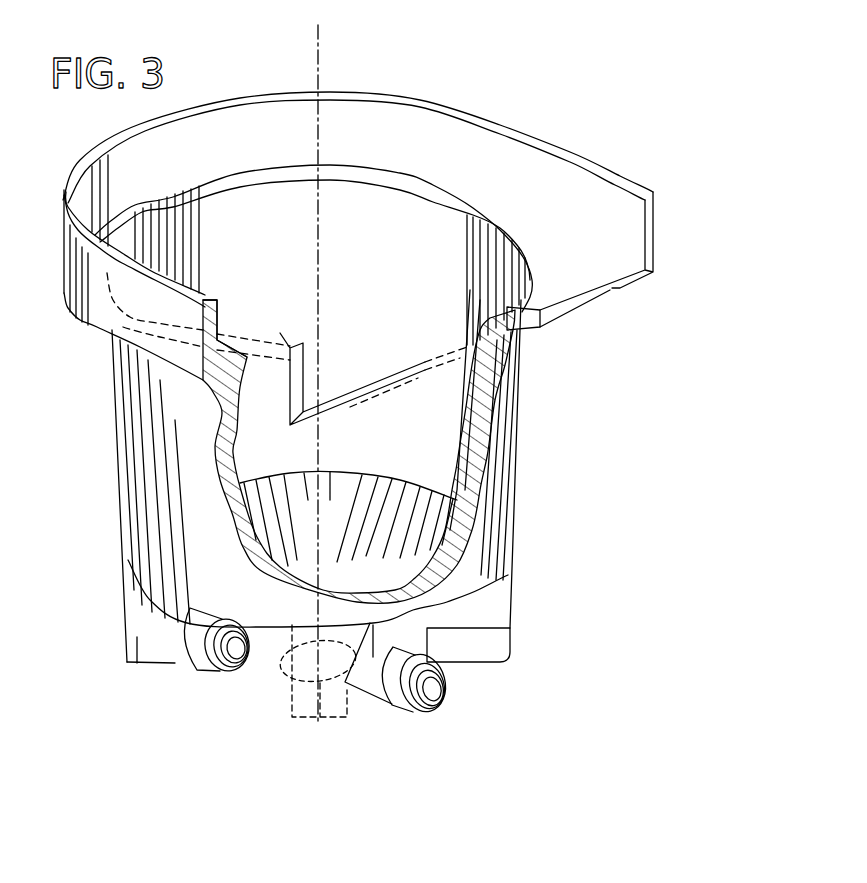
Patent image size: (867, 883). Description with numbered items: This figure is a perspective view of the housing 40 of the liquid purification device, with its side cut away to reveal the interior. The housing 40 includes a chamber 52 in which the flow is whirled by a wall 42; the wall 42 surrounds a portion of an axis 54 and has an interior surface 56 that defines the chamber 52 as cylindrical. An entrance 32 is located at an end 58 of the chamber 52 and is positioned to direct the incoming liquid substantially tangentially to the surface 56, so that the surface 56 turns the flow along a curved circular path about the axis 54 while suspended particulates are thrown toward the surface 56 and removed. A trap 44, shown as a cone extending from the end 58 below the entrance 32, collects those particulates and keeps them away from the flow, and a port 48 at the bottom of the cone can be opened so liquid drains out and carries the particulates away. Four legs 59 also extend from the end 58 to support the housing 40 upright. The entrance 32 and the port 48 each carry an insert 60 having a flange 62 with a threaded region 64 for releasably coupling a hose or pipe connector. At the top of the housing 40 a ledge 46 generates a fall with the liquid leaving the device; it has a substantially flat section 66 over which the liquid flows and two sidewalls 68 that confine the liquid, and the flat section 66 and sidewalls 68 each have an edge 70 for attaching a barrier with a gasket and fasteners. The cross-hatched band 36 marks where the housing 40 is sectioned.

The entrance 32 is at (183, 637).
The collar ring 36 is at (530, 130).
The housing 40 is at (513, 480).
The wall 42 is at (198, 424).
The trap 44 is at (305, 660).
The ledge 46 is at (584, 311).
The port 48 is at (340, 637).
The chamber 52 is at (403, 345).
The axis 54 is at (320, 50).
The interior surface 56 is at (446, 424).
The end 58 is at (345, 568).
The legs 59 is at (122, 635).
The insert 60 is at (198, 668).
The flange 62 is at (202, 628).
The threaded region 64 is at (240, 663).
The flat section 66 is at (588, 282).
The sidewalls 68 is at (606, 223).
The edge 70 is at (612, 288).